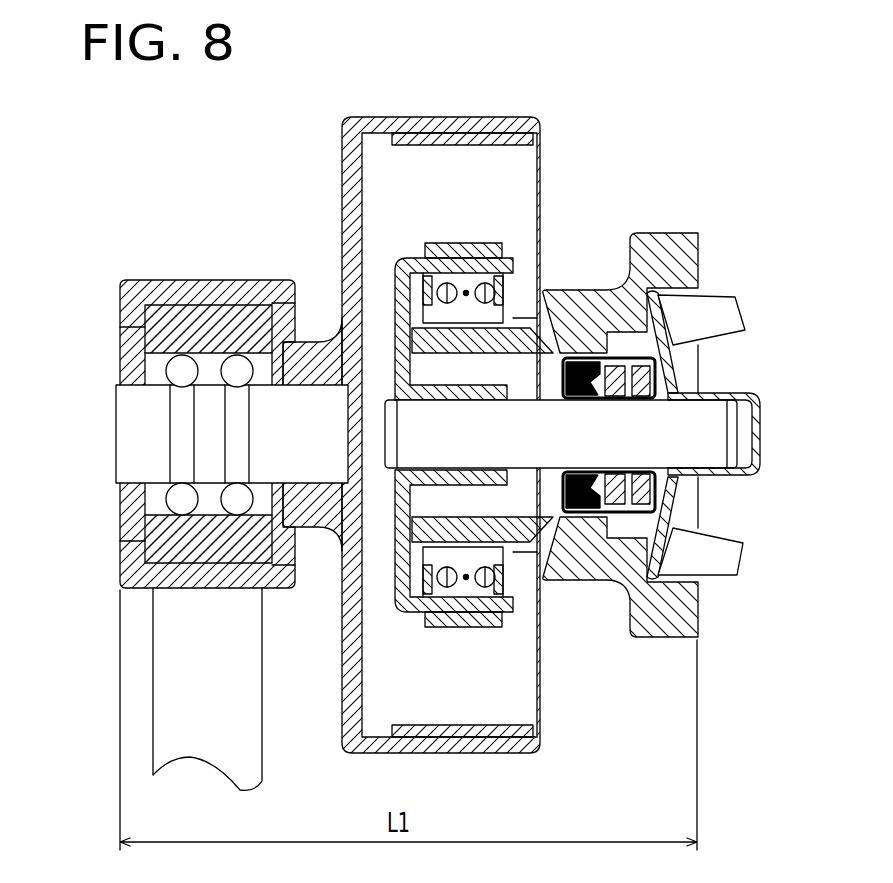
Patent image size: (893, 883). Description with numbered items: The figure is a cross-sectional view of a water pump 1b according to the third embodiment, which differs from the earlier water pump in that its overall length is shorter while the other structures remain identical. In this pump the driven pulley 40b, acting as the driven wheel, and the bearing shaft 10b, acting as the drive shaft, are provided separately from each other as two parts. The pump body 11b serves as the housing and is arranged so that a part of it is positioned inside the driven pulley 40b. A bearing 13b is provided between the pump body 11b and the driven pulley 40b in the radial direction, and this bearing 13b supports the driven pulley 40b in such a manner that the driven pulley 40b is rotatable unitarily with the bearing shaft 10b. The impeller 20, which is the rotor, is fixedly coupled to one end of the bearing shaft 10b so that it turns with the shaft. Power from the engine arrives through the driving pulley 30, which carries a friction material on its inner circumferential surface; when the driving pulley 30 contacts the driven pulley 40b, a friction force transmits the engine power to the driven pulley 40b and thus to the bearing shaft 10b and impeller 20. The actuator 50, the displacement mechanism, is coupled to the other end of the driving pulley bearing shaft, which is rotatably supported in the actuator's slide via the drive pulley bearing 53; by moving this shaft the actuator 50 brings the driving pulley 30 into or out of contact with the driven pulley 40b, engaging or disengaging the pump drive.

The water pump 1b is at (434, 426).
The bearing shaft 10b is at (698, 415).
The pump body 11b is at (583, 295).
The bearing 13b is at (463, 590).
The impeller 20 is at (718, 305).
The driving pulley 30 is at (481, 99).
The driven pulley 40b is at (497, 265).
The actuator 50 is at (179, 270).
The drive pulley bearing 53 is at (211, 520).